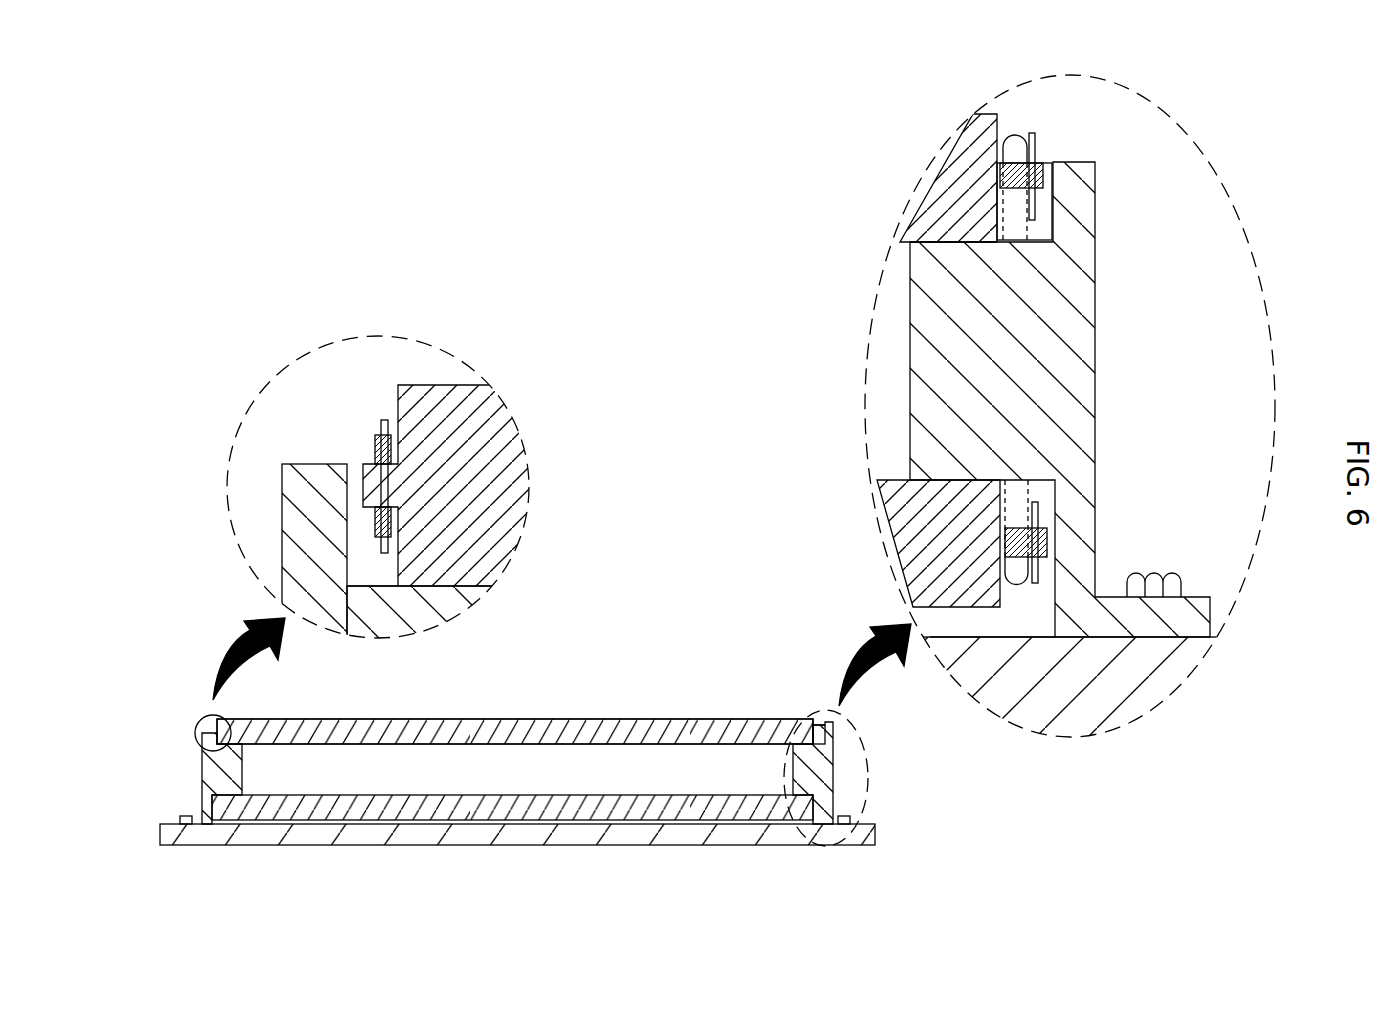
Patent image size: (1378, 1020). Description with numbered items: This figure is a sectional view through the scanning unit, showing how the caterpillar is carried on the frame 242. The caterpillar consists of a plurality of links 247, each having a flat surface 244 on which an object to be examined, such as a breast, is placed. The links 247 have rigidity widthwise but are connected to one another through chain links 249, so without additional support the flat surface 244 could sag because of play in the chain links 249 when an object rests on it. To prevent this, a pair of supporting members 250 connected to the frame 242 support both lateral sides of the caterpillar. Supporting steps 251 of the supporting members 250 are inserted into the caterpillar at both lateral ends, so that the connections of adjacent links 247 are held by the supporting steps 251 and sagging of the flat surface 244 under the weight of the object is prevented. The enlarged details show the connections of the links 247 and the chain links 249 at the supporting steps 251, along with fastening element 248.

The frame 242 is at (570, 838).
The flat surface 244 is at (670, 719).
The link 247 is at (478, 719).
The nut 248 is at (1043, 180).
The chain link 249 is at (378, 326).
The supporting member 250 is at (290, 493).
The supporting step 251 is at (908, 240).